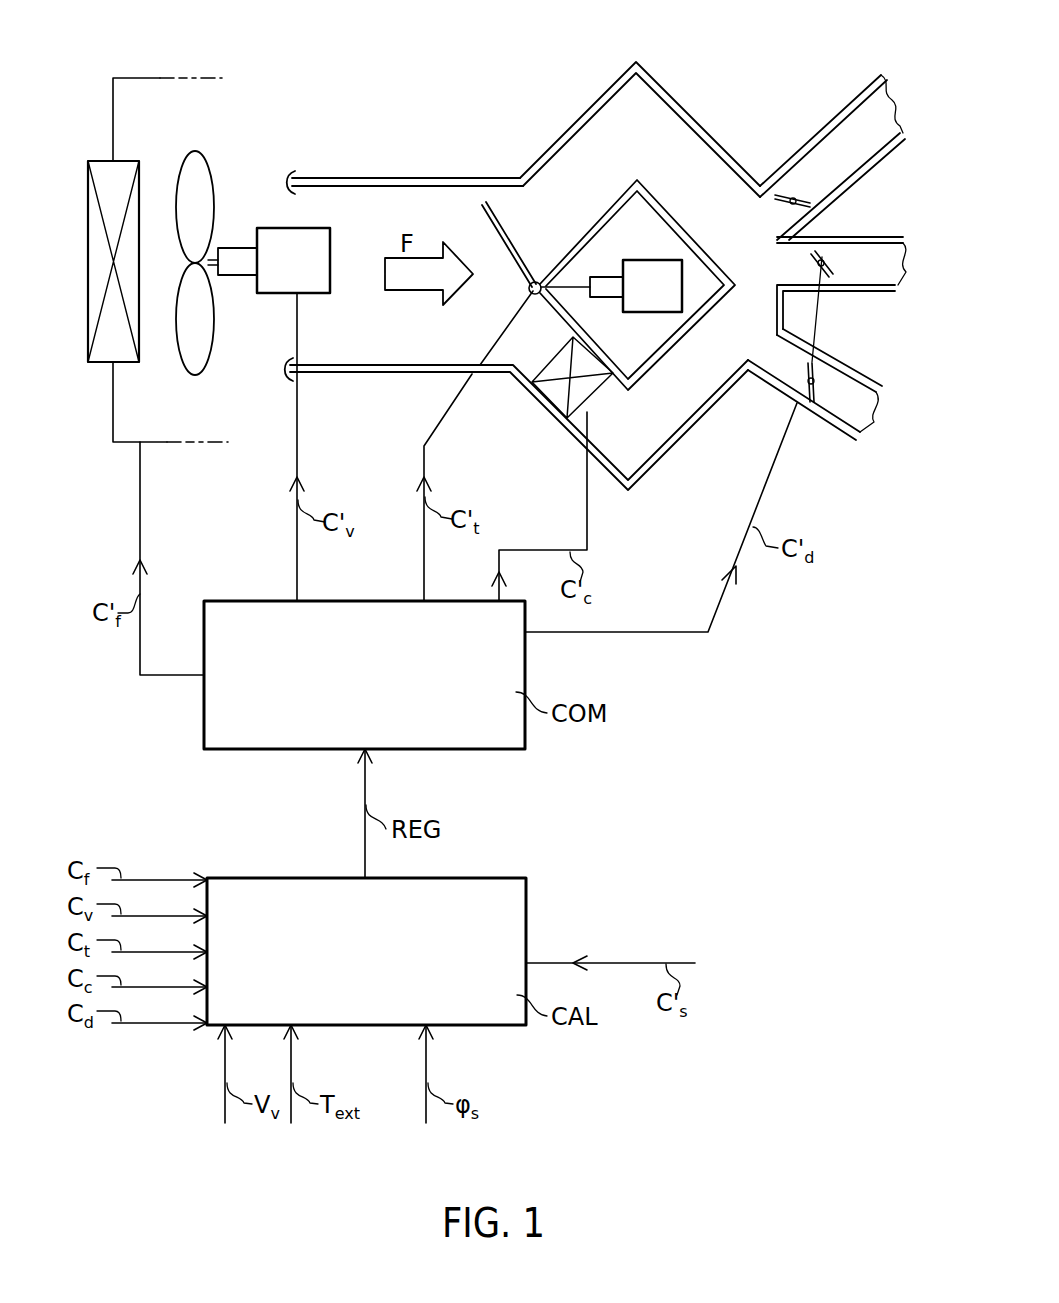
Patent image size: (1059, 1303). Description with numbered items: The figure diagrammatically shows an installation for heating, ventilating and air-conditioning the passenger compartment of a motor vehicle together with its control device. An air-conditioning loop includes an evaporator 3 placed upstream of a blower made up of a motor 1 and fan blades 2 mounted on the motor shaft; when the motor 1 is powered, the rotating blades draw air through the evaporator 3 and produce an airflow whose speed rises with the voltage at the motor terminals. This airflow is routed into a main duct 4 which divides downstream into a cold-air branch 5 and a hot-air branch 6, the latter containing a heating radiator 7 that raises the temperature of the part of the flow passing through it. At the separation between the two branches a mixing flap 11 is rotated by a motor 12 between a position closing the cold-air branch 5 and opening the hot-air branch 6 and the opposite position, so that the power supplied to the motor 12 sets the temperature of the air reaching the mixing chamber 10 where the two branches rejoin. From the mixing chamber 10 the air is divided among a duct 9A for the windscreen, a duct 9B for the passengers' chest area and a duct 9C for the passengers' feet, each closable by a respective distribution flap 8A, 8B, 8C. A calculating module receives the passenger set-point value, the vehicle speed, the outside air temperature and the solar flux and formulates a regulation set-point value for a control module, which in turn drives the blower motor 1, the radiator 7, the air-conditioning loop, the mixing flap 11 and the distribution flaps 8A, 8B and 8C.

The motor 1 is at (316, 237).
The fan blades 2 is at (210, 168).
The evaporator 3 is at (88, 228).
The main duct 4 is at (432, 202).
The cold-air branch 5 is at (655, 107).
The hot-air branch 6 is at (672, 415).
The heating radiator 7 is at (556, 394).
The distribution flap 8A is at (798, 213).
The distribution flap 8B is at (824, 262).
The distribution flap 8C is at (812, 402).
The duct 9A is at (876, 118).
The duct 9B is at (884, 258).
The duct 9C is at (855, 395).
The mixing chamber 10 is at (752, 290).
The mixing flap 11 is at (535, 281).
The motor 12 is at (645, 260).